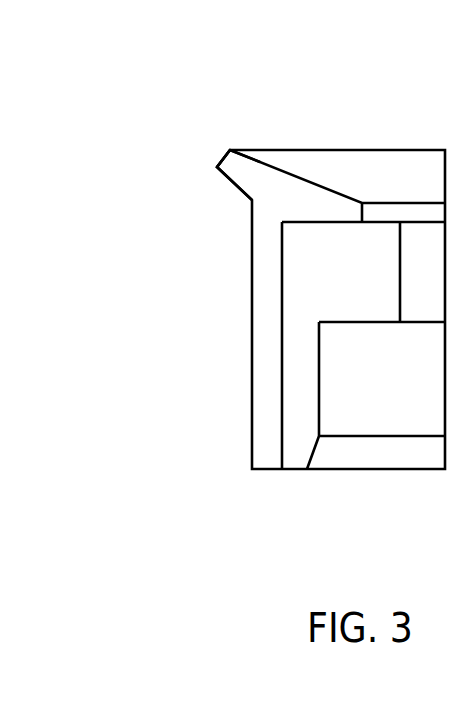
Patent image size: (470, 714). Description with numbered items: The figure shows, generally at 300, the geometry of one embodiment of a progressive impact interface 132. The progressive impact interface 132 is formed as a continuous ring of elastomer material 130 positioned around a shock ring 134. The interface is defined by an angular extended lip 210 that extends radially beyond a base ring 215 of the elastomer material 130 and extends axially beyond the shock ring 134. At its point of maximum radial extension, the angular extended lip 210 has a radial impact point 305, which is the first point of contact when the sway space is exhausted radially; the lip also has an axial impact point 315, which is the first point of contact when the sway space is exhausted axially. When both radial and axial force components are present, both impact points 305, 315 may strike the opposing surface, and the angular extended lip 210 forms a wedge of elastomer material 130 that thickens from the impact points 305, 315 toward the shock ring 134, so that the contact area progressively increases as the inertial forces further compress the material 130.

The geometry of the progressive impact interface 300 is at (406, 85).
The angular extended lip 210 is at (192, 128).
The base ring 215 is at (252, 390).
The radial impact point 305 is at (216, 167).
The axial impact point 315 is at (230, 150).
The progressive impact interface 132 is at (346, 168).
The elastomer material 130 is at (270, 310).
The shock ring 134 is at (295, 452).